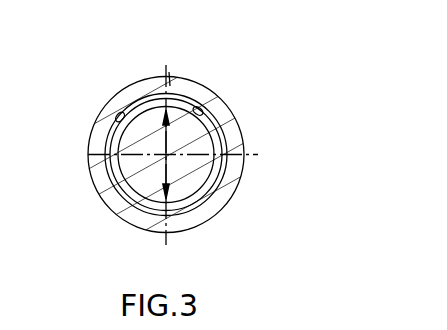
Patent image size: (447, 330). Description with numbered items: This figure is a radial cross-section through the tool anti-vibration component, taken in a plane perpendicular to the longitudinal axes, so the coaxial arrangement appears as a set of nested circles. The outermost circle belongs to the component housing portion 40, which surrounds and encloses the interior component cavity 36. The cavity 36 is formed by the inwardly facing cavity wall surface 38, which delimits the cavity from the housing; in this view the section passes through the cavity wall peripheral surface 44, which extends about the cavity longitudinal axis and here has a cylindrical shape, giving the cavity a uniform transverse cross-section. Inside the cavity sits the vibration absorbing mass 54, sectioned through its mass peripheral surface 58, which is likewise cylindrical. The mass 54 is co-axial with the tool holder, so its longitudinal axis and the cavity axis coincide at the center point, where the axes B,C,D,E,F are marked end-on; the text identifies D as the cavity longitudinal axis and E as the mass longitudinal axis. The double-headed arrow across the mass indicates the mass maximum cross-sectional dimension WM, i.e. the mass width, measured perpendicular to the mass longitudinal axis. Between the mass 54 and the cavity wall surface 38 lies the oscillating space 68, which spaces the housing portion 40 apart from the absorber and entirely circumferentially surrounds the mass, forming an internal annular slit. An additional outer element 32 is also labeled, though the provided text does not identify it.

The outer ring / housing 32 is at (134, 86).
The component housing portion 40 is at (153, 87).
The cavity wall peripheral surface 44 is at (114, 140).
The interior component cavity 36 is at (180, 80).
The cavity wall surface 38 is at (200, 108).
The longitudinal axes B,C,D,E,F is at (167, 152).
The mass maximum cross-sectional dimension WM is at (158, 151).
The vibration absorbing mass 54 is at (123, 159).
The mass peripheral surface 58 is at (193, 200).
The oscillating space 68 is at (231, 171).